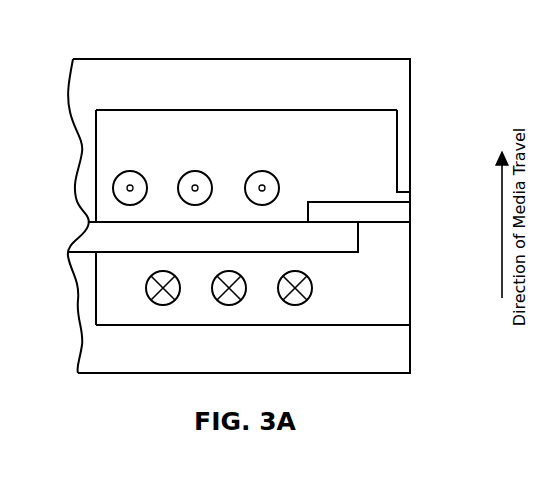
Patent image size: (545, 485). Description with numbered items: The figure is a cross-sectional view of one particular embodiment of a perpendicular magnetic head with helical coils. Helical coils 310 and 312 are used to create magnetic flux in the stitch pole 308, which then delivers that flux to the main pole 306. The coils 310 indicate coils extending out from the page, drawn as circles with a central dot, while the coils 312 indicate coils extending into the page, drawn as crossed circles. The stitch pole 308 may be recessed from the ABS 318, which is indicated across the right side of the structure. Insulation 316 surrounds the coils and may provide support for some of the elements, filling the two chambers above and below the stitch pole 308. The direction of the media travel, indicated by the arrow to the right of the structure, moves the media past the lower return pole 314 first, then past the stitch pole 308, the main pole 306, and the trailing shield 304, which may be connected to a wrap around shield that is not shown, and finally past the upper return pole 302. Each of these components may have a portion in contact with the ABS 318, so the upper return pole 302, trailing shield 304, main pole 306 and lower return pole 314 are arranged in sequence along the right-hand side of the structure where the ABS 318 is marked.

The upper return pole 302 is at (289, 94).
The trailing shield 304 is at (411, 153).
The main pole 306 is at (411, 207).
The stitch pole 308 is at (237, 246).
The helical coils 310 is at (129, 172).
The helical coils 312 is at (147, 290).
The lower return pole 314 is at (237, 359).
The insulation 316 is at (327, 162).
The ABS 318 is at (414, 77).